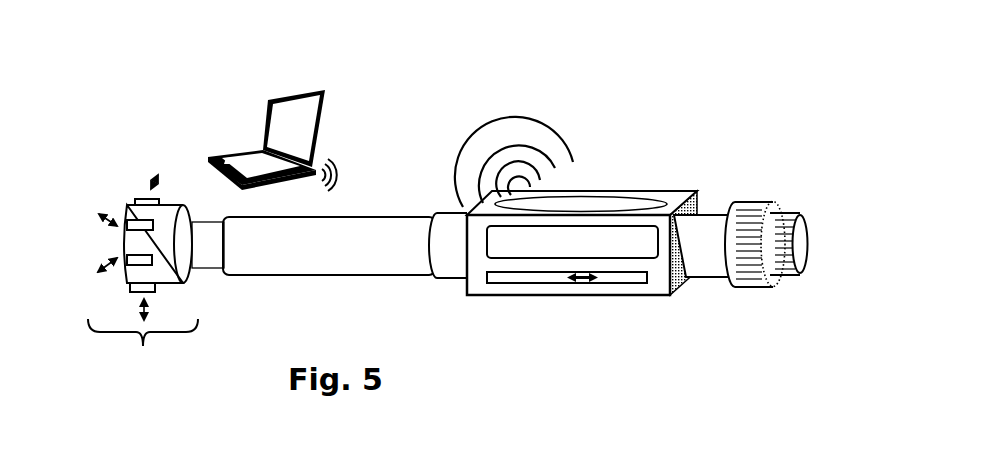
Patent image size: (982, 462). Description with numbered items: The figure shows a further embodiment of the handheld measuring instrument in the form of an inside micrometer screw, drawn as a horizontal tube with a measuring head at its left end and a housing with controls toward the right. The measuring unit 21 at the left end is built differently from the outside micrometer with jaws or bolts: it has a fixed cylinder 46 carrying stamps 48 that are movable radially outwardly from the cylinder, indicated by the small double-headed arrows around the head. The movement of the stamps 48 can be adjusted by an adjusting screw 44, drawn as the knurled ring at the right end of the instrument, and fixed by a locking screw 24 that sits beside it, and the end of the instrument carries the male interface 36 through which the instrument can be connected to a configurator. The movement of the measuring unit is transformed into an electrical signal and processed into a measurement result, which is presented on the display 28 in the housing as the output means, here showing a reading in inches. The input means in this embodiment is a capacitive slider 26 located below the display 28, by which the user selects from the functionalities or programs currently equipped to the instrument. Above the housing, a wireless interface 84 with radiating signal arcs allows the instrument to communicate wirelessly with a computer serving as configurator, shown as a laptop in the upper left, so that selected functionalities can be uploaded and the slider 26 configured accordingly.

The measuring unit 21 is at (128, 240).
The fixed cylinder 46 is at (133, 276).
The stamps 48 is at (126, 265).
The wireless interface 84 is at (636, 204).
The display 28 is at (497, 242).
The capacitive slider 26 is at (633, 282).
The adjusting screw 44 is at (747, 278).
The locking screw 24 is at (802, 242).
The male interface 36 is at (818, 205).